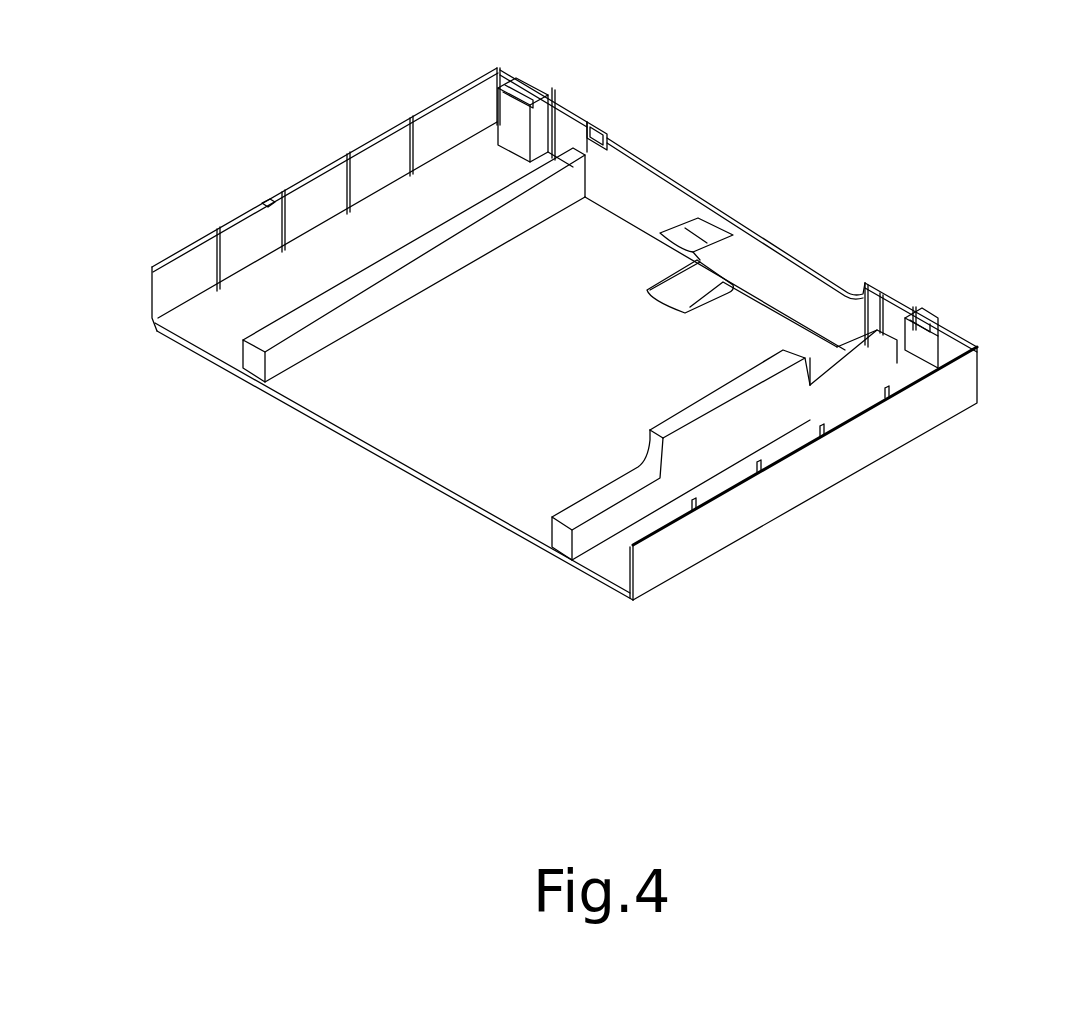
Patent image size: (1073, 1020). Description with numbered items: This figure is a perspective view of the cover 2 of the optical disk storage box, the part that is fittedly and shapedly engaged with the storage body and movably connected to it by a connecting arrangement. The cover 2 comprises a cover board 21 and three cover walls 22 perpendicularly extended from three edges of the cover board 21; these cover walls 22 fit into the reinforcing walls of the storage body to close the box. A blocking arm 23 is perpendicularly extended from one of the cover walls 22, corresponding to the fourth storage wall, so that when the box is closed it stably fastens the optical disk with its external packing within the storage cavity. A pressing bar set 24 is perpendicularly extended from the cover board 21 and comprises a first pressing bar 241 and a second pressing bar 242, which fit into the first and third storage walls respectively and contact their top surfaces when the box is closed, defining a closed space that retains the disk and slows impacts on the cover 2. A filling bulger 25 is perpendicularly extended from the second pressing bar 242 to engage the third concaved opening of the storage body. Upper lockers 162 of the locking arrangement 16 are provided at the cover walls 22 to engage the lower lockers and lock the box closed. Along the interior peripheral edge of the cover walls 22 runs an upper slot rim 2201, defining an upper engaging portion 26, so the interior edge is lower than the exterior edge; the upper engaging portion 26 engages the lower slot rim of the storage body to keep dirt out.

The cover 2 is at (297, 462).
The locking arrangement 16 is at (658, 54).
The cover board 21 is at (480, 377).
The cover walls 22 is at (670, 553).
The blocking arm 23 is at (670, 240).
The pressing bar set 24 is at (570, 354).
The first pressing bar 241 is at (400, 263).
The second pressing bar 242 is at (612, 487).
The filling bulger 25 is at (720, 398).
The upper engaging portion 26 is at (313, 180).
The upper locker 162 is at (523, 85).
The upper slot rim 2201 is at (270, 202).